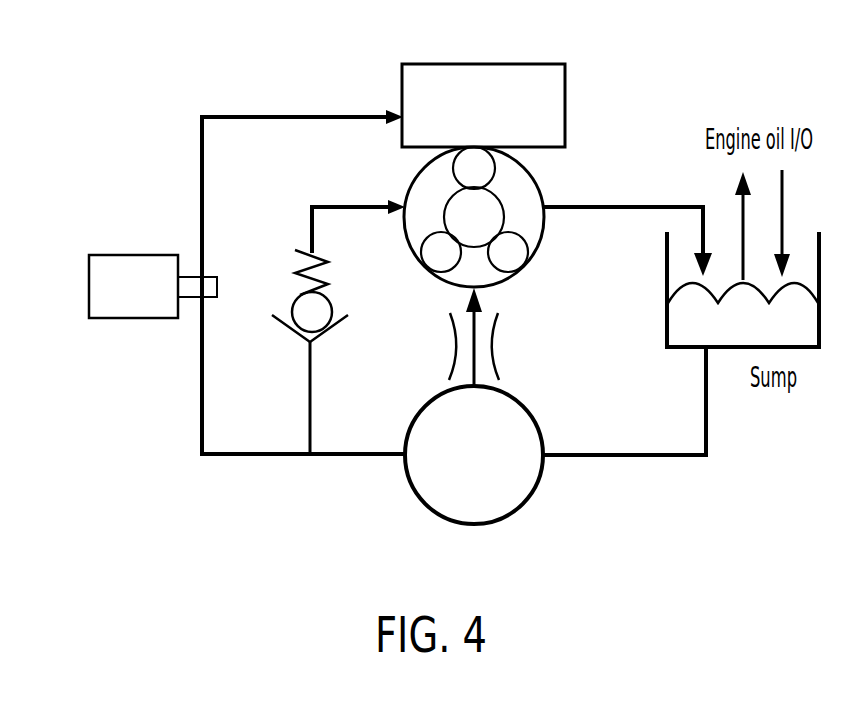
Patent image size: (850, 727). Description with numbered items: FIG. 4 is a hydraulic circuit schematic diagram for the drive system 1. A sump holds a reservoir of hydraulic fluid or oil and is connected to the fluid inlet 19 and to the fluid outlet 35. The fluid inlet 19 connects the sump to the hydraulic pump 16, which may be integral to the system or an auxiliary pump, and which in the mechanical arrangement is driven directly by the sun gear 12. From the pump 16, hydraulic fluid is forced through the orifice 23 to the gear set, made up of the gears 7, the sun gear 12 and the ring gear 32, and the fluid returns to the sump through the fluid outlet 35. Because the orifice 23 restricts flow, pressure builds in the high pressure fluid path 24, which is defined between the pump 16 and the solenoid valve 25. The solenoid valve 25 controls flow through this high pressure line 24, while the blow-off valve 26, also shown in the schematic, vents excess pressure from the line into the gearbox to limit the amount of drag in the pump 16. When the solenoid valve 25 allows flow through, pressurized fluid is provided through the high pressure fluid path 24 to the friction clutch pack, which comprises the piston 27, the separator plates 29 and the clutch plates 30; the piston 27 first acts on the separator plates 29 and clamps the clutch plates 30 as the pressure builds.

The system 1 is at (641, 100).
The gears 7 is at (520, 217).
The sun gear 12 is at (520, 217).
The ring gear 32 is at (533, 248).
The hydraulic pump 16 is at (520, 508).
The fluid inlet 19 is at (673, 458).
The orifice 23 is at (493, 355).
The high pressure fluid path 24 is at (200, 393).
The solenoid valve 25 is at (103, 288).
The blow-off valve 26 is at (318, 311).
The piston 27 is at (426, 101).
The separator plates 29 is at (426, 101).
The clutch plates 30 is at (401, 90).
The fluid outlet 35 is at (597, 206).